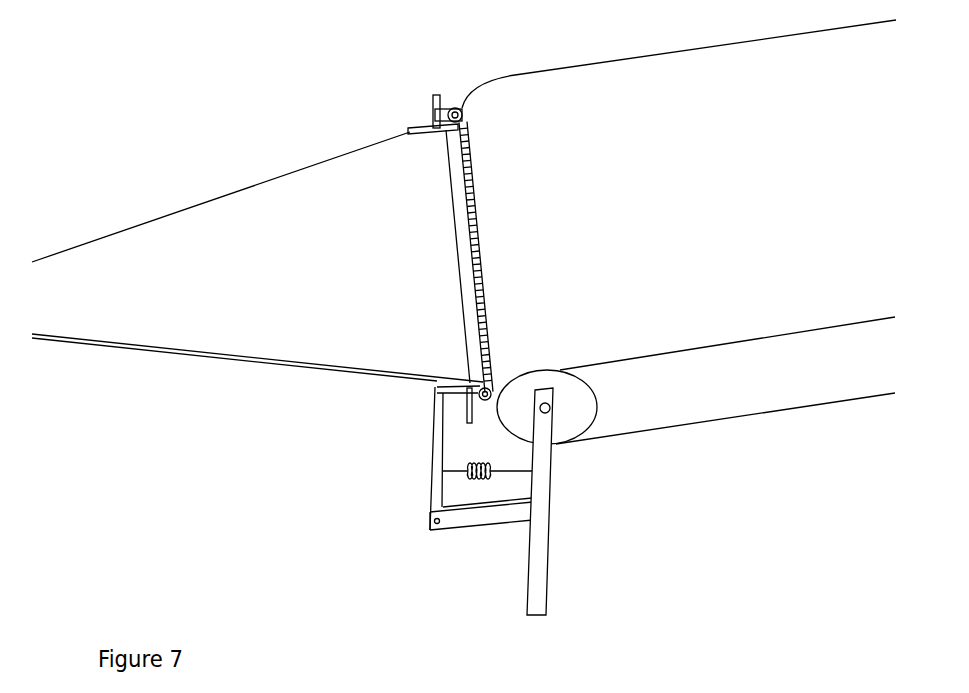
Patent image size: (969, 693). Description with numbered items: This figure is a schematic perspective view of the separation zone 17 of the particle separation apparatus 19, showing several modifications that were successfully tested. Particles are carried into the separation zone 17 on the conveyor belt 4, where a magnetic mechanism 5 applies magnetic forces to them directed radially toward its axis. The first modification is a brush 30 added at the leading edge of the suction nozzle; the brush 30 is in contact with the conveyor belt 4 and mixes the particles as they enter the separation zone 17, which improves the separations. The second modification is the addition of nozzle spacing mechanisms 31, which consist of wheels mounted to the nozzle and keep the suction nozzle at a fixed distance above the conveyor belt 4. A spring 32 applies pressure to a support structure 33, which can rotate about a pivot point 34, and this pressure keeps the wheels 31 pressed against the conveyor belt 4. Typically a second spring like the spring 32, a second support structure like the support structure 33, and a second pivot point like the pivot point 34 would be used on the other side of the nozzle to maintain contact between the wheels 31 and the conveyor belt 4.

The conveyor belt 4 is at (671, 232).
The magnetic mechanism 5 is at (530, 501).
The separation zone 17 is at (485, 270).
The apparatus 19 is at (257, 257).
The brush 30 is at (462, 107).
The nozzle spacing mechanisms 31 is at (480, 388).
The spring 32 is at (487, 457).
The support structure 33 is at (440, 435).
The pivot point 34 is at (432, 515).